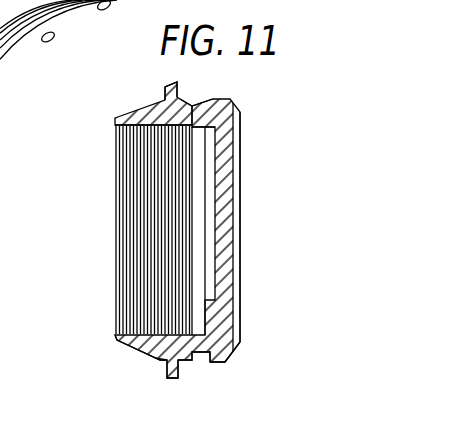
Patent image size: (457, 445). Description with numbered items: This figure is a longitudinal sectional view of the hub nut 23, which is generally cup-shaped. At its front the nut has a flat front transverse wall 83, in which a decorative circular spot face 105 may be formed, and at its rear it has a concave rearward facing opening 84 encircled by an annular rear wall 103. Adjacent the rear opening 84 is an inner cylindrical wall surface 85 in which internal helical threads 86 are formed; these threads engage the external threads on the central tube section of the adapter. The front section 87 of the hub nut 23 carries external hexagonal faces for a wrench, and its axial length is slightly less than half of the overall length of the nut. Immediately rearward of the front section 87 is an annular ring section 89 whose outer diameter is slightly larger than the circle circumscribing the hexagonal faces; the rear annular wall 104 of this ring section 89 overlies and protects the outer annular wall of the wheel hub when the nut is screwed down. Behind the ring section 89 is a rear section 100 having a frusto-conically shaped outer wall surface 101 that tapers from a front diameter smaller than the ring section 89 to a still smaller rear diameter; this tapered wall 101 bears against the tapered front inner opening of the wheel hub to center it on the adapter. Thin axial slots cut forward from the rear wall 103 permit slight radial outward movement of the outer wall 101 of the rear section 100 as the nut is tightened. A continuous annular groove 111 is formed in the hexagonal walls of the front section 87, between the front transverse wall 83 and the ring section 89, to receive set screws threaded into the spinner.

The hub nut 23 is at (256, 223).
The front transverse wall 83 is at (245, 342).
The rearward facing opening 84 is at (152, 292).
The inner cylindrical wall surface 85 is at (200, 127).
The internal helical threads 86 is at (131, 121).
The front section 87 is at (190, 360).
The annular ring section 89 is at (175, 380).
The rear section 100 is at (160, 357).
The frusto-conically shaped outer wall surface 101 is at (130, 347).
The annular rear wall 103 is at (113, 120).
The rear annular wall 104 is at (163, 90).
The decorative circular spot face 105 is at (236, 300).
The continuous annular groove 111 is at (204, 101).